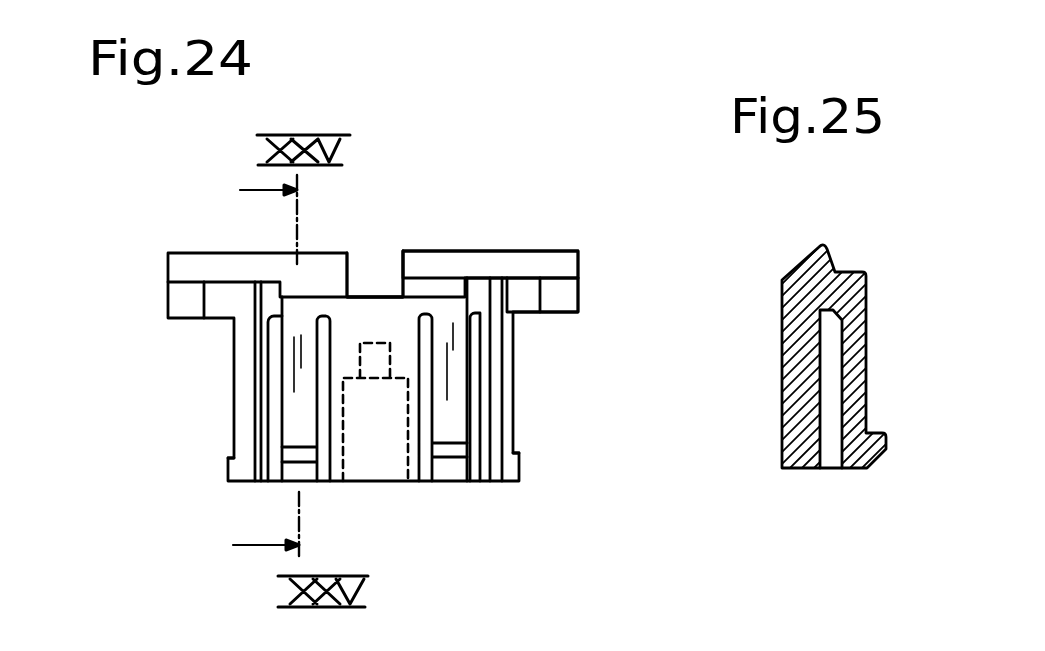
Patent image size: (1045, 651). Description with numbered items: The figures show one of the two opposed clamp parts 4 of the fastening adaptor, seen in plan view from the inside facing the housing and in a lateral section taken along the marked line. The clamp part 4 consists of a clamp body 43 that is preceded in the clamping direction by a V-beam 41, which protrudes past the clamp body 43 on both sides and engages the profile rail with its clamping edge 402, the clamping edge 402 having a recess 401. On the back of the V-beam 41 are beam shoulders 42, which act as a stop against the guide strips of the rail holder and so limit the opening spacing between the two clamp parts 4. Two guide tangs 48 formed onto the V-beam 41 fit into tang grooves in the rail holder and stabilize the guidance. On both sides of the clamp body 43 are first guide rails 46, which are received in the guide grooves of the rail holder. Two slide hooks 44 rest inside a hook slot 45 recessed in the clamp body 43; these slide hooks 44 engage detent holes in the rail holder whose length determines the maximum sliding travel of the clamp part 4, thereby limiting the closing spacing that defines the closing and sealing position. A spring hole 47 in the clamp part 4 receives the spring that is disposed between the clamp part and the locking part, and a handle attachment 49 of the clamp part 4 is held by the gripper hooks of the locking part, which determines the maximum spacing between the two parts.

In FIG. 24, the clamp part 4 is at (523, 106).
In FIG. 24, the recess 401 is at (377, 272).
In FIG. 24, the clamping edge 402 is at (528, 250).
In FIG. 24, the V-beam 41 is at (326, 268).
In FIG. 25, the V-beam 41 is at (813, 273).
In FIG. 24, the beam shoulders 42 is at (560, 313).
In FIG. 24, the clamp body 43 is at (403, 341).
In FIG. 25, the clamp body 43 is at (800, 448).
In FIG. 24, the slide hooks 44 is at (295, 413).
In FIG. 24, the hook slot 45 is at (263, 445).
In FIG. 24, the first guide rails 46 is at (243, 348).
In FIG. 24, the spring hole 47 is at (380, 458).
In FIG. 24, the guide tangs 48 is at (223, 305).
In FIG. 24, the handle attachment 49 is at (228, 462).